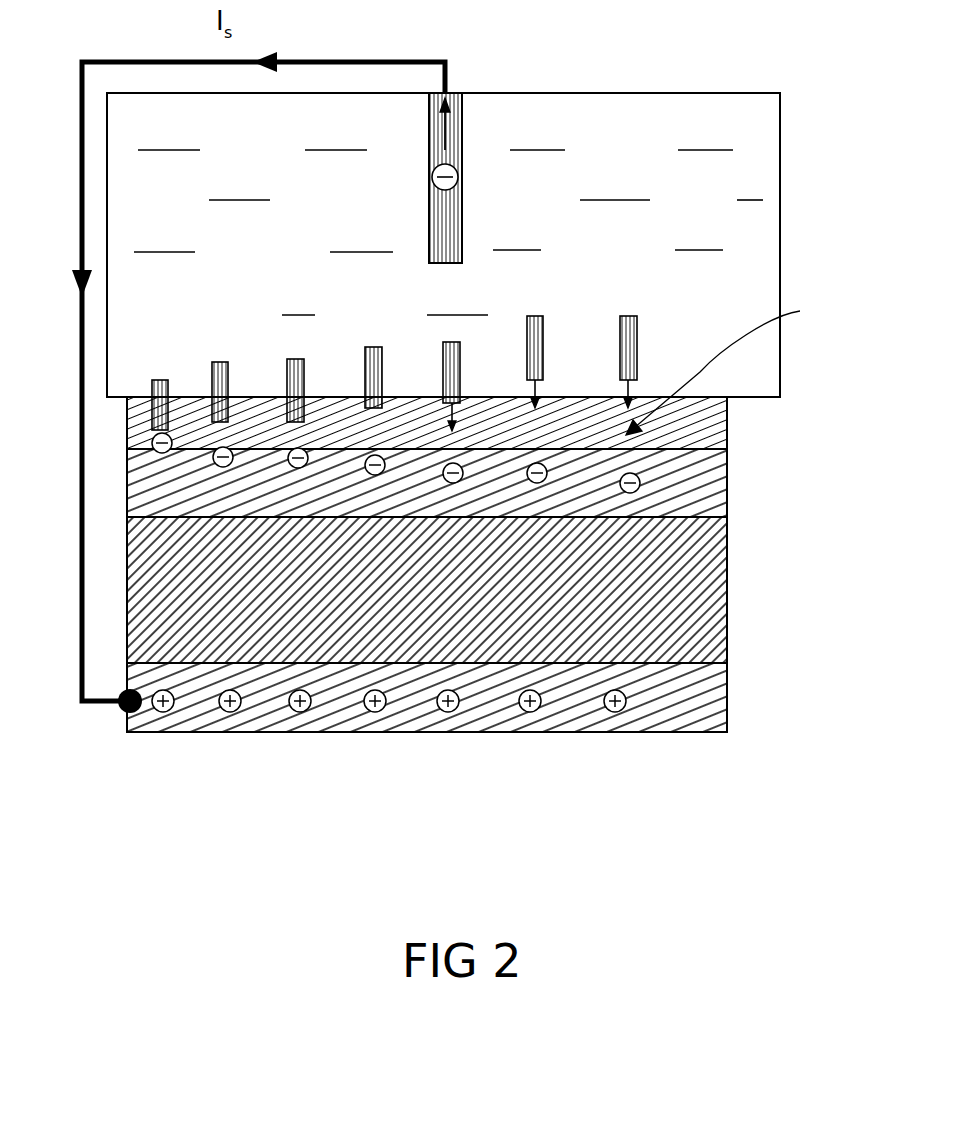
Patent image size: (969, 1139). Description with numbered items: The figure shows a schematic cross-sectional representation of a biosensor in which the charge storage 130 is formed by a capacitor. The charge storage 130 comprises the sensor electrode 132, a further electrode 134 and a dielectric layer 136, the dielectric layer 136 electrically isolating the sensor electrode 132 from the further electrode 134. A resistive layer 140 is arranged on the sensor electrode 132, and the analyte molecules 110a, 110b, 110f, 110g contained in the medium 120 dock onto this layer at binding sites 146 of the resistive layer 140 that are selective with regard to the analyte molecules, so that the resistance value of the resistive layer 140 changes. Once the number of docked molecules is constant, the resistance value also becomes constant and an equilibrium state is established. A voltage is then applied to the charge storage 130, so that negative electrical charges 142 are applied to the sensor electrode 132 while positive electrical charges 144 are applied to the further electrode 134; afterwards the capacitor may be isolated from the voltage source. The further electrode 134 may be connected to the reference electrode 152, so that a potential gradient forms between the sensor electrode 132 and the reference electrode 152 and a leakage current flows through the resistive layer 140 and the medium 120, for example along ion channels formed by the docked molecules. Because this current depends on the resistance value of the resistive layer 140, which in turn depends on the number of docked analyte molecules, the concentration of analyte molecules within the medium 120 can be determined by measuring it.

The medium 120 is at (705, 115).
The reference electrode 152 is at (465, 110).
The analyte molecule 110a is at (162, 380).
The analyte molecule 110b is at (218, 362).
The analyte molecule 110f is at (543, 325).
The analyte molecule 110g is at (637, 345).
The resistive layer 140 is at (727, 415).
The negative electrical charges 142 is at (727, 471).
The sensor electrode 132 is at (727, 498).
The dielectric layer 136 is at (727, 592).
The further electrode 134 is at (476, 697).
The charge storage 130 is at (512, 564).
The binding sites 146 is at (741, 365).
The positive electrical charges 144 is at (620, 710).